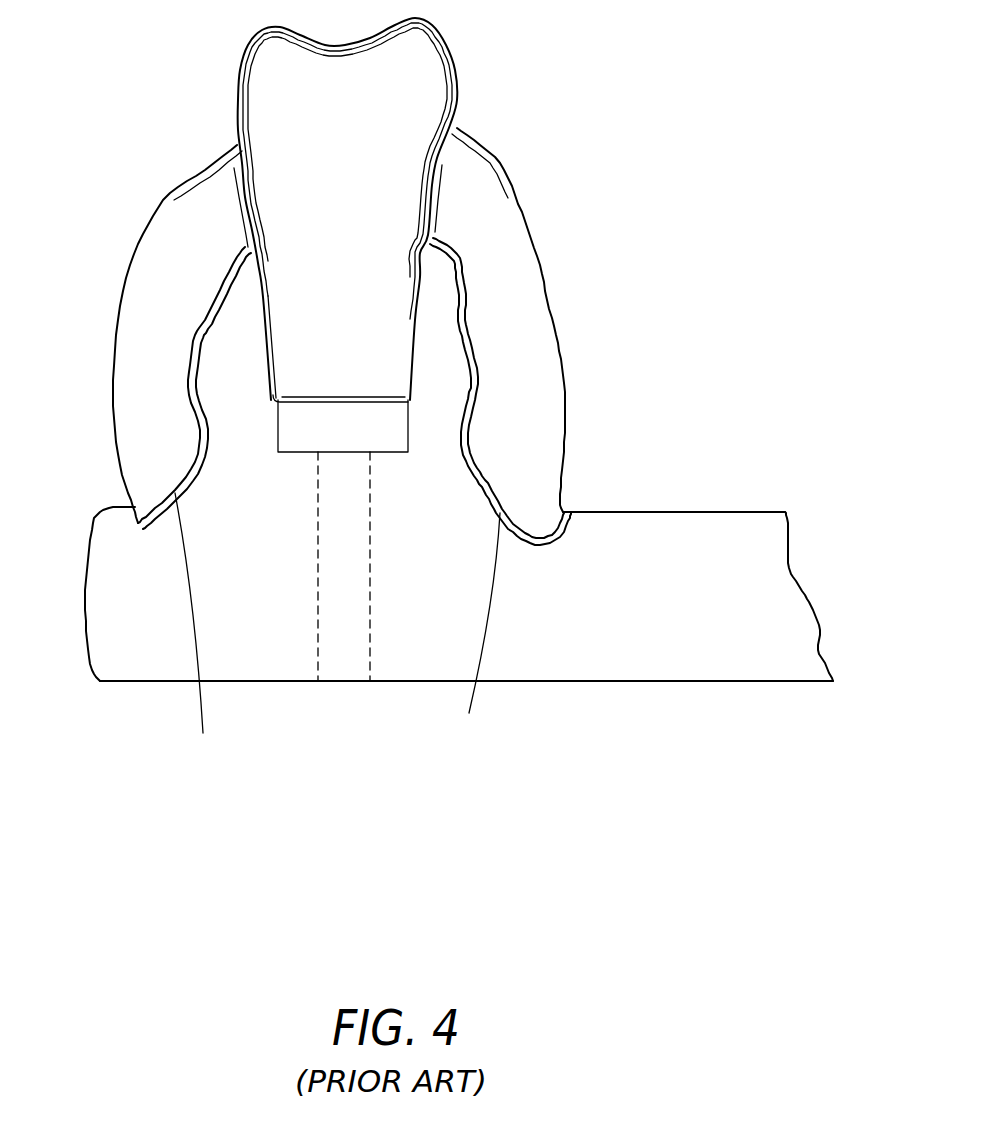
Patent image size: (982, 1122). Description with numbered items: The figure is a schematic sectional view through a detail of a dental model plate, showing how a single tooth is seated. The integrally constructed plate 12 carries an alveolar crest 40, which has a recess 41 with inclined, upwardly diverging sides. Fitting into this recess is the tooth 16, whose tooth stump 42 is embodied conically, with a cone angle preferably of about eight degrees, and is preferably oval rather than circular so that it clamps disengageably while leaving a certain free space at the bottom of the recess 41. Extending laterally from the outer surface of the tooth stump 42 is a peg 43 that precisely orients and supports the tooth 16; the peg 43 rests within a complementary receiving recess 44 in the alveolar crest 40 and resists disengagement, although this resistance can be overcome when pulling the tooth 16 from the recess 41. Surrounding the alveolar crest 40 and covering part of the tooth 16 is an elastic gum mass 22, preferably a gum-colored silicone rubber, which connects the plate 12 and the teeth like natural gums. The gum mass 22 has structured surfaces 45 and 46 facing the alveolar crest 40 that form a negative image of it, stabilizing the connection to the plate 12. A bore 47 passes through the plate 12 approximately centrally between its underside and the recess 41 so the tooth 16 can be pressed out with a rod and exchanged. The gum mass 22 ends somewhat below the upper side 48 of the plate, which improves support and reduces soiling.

The tooth 16 is at (410, 93).
The gum mass 22 is at (530, 447).
The alveolar crest 40 is at (445, 363).
The recess 41 is at (343, 428).
The tooth stump 42 is at (287, 352).
The peg 43 is at (432, 298).
The receiving recess 44 is at (443, 287).
The structured surface 45 is at (480, 630).
The structured surface 46 is at (200, 629).
The bore 47 is at (343, 660).
The upper side of the plate 48 is at (758, 505).
The plate 12 is at (733, 657).